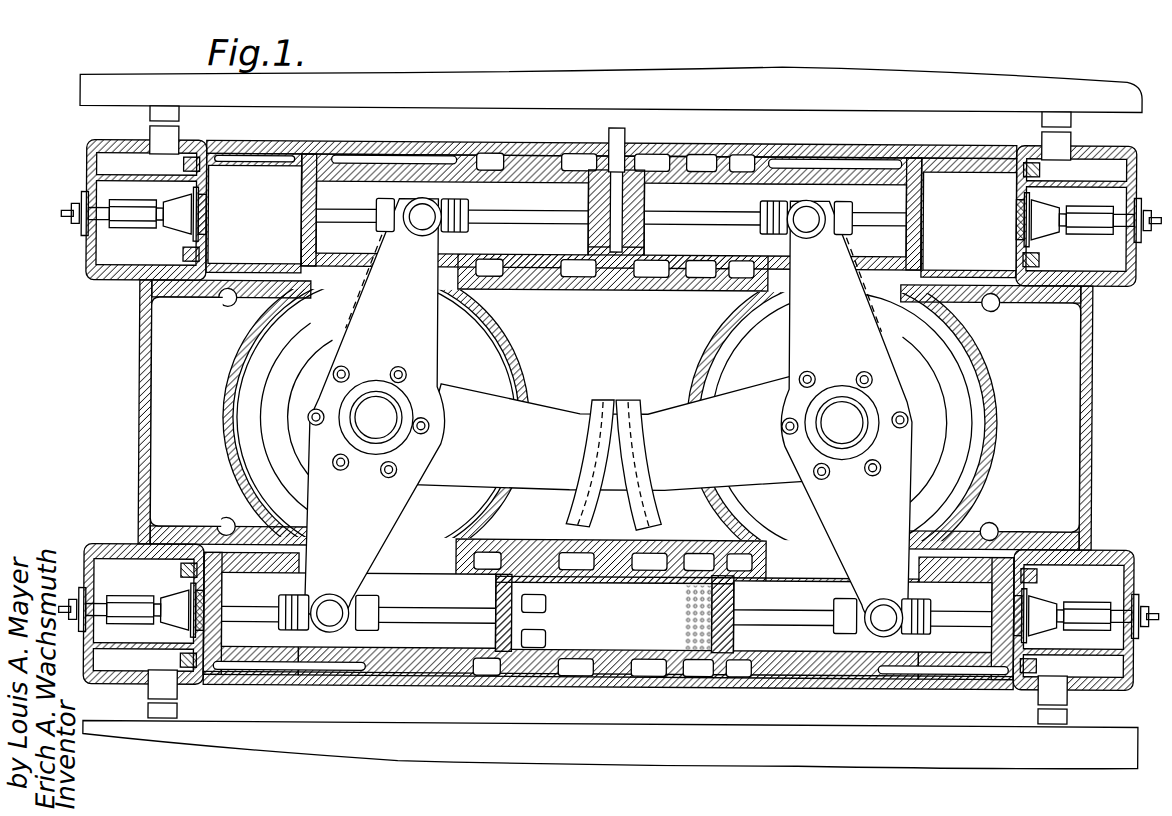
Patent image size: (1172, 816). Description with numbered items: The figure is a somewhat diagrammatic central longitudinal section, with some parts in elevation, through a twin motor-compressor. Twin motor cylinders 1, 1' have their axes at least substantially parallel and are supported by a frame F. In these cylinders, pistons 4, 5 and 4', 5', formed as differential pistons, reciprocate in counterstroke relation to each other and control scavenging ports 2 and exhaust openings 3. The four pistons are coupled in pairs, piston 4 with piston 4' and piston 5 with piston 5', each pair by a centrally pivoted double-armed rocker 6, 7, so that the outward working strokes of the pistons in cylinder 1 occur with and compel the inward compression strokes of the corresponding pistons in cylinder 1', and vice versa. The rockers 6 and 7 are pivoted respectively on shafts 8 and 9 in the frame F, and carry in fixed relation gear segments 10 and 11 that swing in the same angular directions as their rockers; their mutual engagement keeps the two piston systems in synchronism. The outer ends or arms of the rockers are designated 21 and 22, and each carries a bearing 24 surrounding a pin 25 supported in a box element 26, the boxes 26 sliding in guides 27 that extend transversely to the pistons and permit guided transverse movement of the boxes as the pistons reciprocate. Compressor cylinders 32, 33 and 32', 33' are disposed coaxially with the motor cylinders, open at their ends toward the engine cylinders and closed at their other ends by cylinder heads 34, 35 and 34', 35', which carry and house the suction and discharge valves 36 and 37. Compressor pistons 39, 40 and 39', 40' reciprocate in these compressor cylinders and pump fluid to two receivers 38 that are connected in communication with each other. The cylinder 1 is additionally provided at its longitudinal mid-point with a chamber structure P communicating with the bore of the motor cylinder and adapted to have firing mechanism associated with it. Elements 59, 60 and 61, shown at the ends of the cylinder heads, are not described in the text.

The motor cylinder 1 is at (619, 188).
The motor cylinder 1' is at (611, 647).
The scavenging ports 2 is at (703, 648).
The exhaust openings 3 is at (535, 613).
The piston 4 is at (452, 250).
The piston 4' is at (487, 642).
The piston 5 is at (770, 250).
The piston 5' is at (736, 645).
The double-armed rocker 6 is at (380, 318).
The double-armed rocker 7 is at (807, 325).
The shaft 8 is at (378, 419).
The shaft 9 is at (840, 423).
The gear segment 10 is at (603, 400).
The gear segment 11 is at (634, 400).
The arm 21 is at (419, 205).
The arm 22 is at (332, 636).
The bearing 24 is at (455, 233).
The pin 25 is at (425, 215).
The box element 26 is at (438, 200).
The guide 27 is at (390, 207).
The compressor cylinder 32 is at (257, 190).
The compressor cylinder 32' is at (289, 684).
The compressor cylinder 33 is at (970, 196).
The compressor cylinder 33' is at (943, 694).
The cylinder head 34 is at (126, 209).
The cylinder head 34' is at (143, 600).
The cylinder head 35 is at (1084, 204).
The cylinder head 35' is at (1073, 614).
The suction valve 36 is at (200, 228).
The discharge valve 37 is at (185, 160).
The receiver 38 is at (775, 92).
The compressor piston 39 is at (344, 192).
The compressor piston 39' is at (215, 629).
The compressor piston 40 is at (906, 195).
The compressor piston 40' is at (986, 639).
The adjusting screw 59 is at (67, 207).
The spring housing 60 is at (117, 225).
The cone 61 is at (173, 227).
The frame F is at (139, 397).
The chamber structure P is at (607, 135).